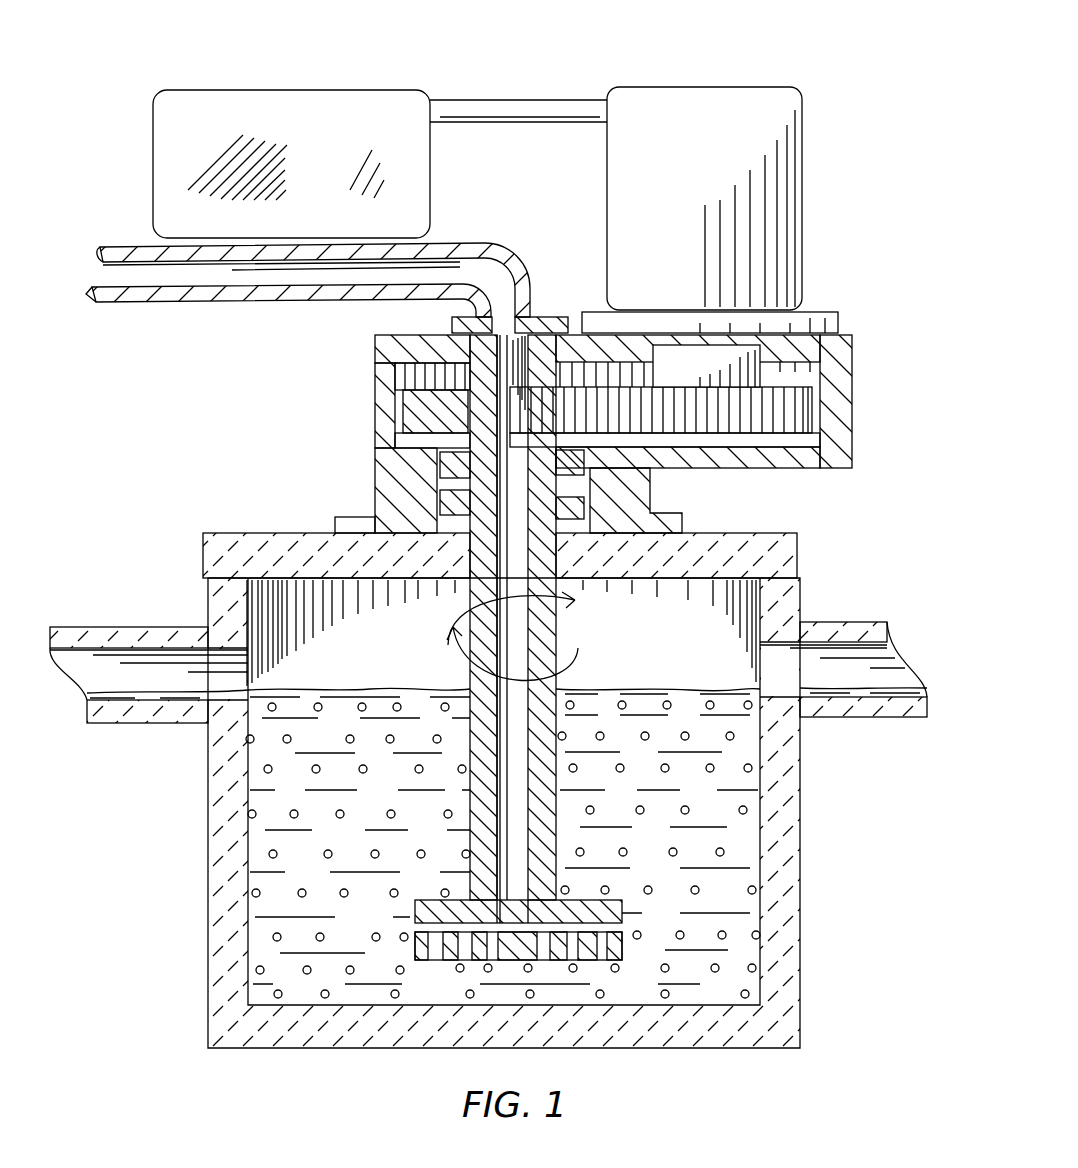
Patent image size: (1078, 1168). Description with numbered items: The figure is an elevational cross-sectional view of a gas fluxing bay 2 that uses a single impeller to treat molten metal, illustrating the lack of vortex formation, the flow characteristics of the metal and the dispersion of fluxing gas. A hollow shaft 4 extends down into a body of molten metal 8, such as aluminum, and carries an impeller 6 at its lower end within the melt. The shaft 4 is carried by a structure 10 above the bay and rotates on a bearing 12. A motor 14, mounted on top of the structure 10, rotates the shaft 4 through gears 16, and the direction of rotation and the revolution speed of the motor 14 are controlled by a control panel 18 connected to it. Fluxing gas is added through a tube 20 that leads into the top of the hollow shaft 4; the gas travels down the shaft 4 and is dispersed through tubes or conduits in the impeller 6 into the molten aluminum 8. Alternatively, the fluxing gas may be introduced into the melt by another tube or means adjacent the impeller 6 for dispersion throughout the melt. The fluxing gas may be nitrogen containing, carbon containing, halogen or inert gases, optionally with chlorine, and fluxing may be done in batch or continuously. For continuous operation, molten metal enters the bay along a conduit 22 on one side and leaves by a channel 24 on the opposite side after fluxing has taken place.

The gas fluxing bay 2 is at (844, 787).
The hollow shaft 4 is at (557, 672).
The impeller 6 is at (598, 962).
The body of molten metal 8 is at (262, 876).
The structure 10 is at (765, 533).
The bearing 12 is at (440, 492).
The motor 14 is at (780, 87).
The gears 16 is at (405, 410).
The control panel 18 is at (375, 90).
The tube 20 is at (162, 302).
The conduit 22 is at (108, 627).
The channel 24 is at (857, 622).